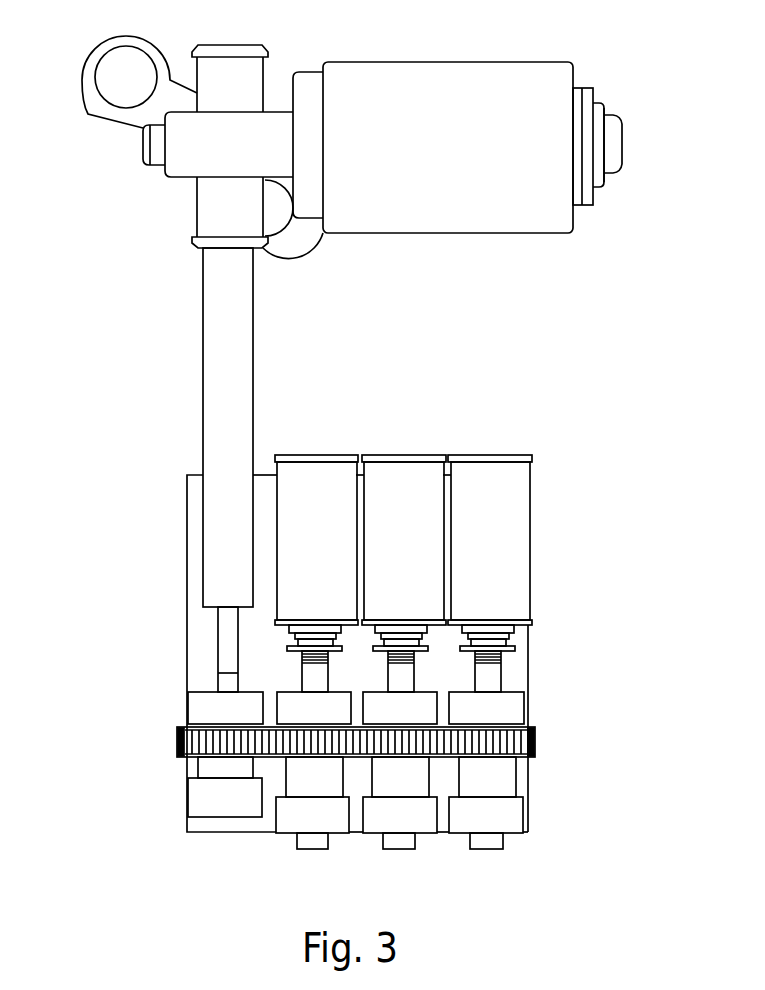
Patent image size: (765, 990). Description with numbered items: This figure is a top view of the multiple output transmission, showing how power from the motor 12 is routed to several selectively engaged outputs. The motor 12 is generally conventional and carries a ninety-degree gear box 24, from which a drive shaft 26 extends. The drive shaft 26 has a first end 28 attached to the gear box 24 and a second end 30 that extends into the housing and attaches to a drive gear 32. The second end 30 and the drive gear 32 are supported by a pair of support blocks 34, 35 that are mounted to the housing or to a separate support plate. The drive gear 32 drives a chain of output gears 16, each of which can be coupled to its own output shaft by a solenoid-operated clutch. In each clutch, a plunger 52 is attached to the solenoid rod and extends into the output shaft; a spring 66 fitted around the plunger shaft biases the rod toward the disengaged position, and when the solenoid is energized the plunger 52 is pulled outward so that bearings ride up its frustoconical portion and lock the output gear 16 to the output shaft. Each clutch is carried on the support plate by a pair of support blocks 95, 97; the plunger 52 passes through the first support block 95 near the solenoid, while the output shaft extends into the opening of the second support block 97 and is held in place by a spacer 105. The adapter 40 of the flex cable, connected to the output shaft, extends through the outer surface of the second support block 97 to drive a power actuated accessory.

The motor 12 is at (473, 212).
The gear box 24 is at (185, 150).
The first end 28 is at (210, 203).
The drive shaft 26 is at (222, 358).
The second end 30 is at (225, 645).
The support block 35 is at (205, 710).
The drive gear 32 is at (180, 745).
The support block 34 is at (202, 803).
The output gear 16 is at (533, 745).
The spring 66 is at (513, 638).
The plunger 52 is at (493, 675).
The support block 95 is at (512, 711).
The spacer 105 is at (498, 781).
The support block 97 is at (510, 813).
The adapter 40 is at (493, 843).